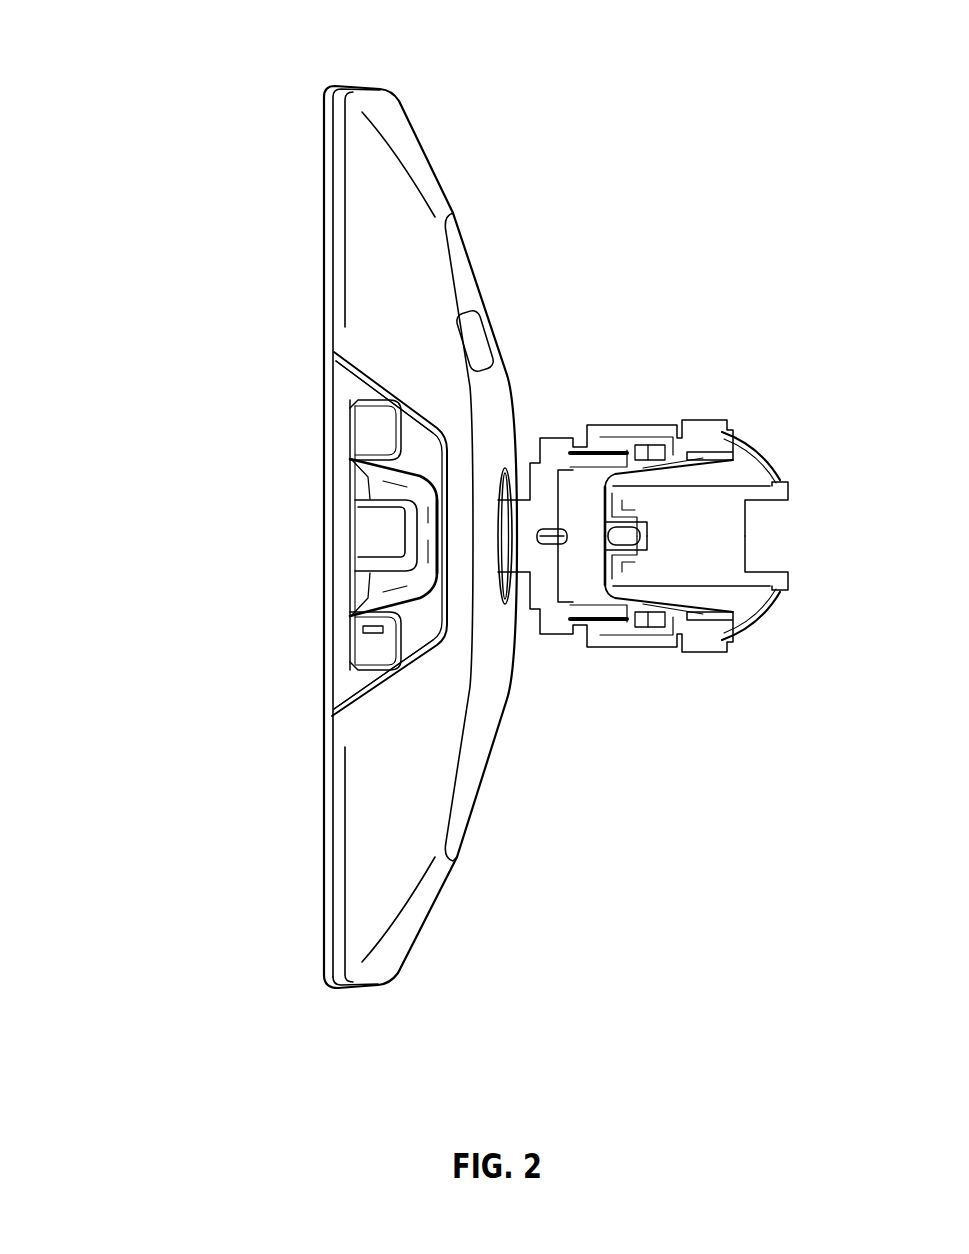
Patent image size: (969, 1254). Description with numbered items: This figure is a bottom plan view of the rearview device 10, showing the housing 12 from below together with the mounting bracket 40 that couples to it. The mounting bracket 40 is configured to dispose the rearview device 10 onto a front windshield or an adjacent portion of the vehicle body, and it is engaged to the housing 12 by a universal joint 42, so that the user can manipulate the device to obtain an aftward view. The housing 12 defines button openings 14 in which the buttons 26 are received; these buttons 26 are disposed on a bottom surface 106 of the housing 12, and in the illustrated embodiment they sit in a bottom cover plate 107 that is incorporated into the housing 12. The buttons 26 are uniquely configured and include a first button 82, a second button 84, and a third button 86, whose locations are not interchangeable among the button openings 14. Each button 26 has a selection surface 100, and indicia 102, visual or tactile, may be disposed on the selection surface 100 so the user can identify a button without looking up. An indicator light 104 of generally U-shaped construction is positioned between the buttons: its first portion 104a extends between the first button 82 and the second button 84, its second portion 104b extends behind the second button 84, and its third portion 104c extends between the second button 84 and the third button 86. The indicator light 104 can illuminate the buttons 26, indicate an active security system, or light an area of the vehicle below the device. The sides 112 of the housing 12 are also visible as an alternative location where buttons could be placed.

The rearview device 10 is at (224, 69).
The housing 12 is at (408, 161).
The button opening 14 is at (358, 697).
The button 26 is at (331, 416).
The mounting bracket 40 is at (750, 467).
The universal joint 42 is at (503, 495).
The first button 82 is at (358, 619).
The second button 84 is at (357, 538).
The third button 86 is at (342, 422).
The selection surface 100 is at (367, 550).
The indicia 102 is at (403, 627).
The indicator light 104 is at (359, 478).
The first portion 104a is at (362, 580).
The second portion 104b is at (428, 475).
The third portion 104c is at (364, 498).
The bottom surface 106 is at (366, 259).
The bottom cover plate 107 is at (423, 458).
The sides 112 is at (361, 988).